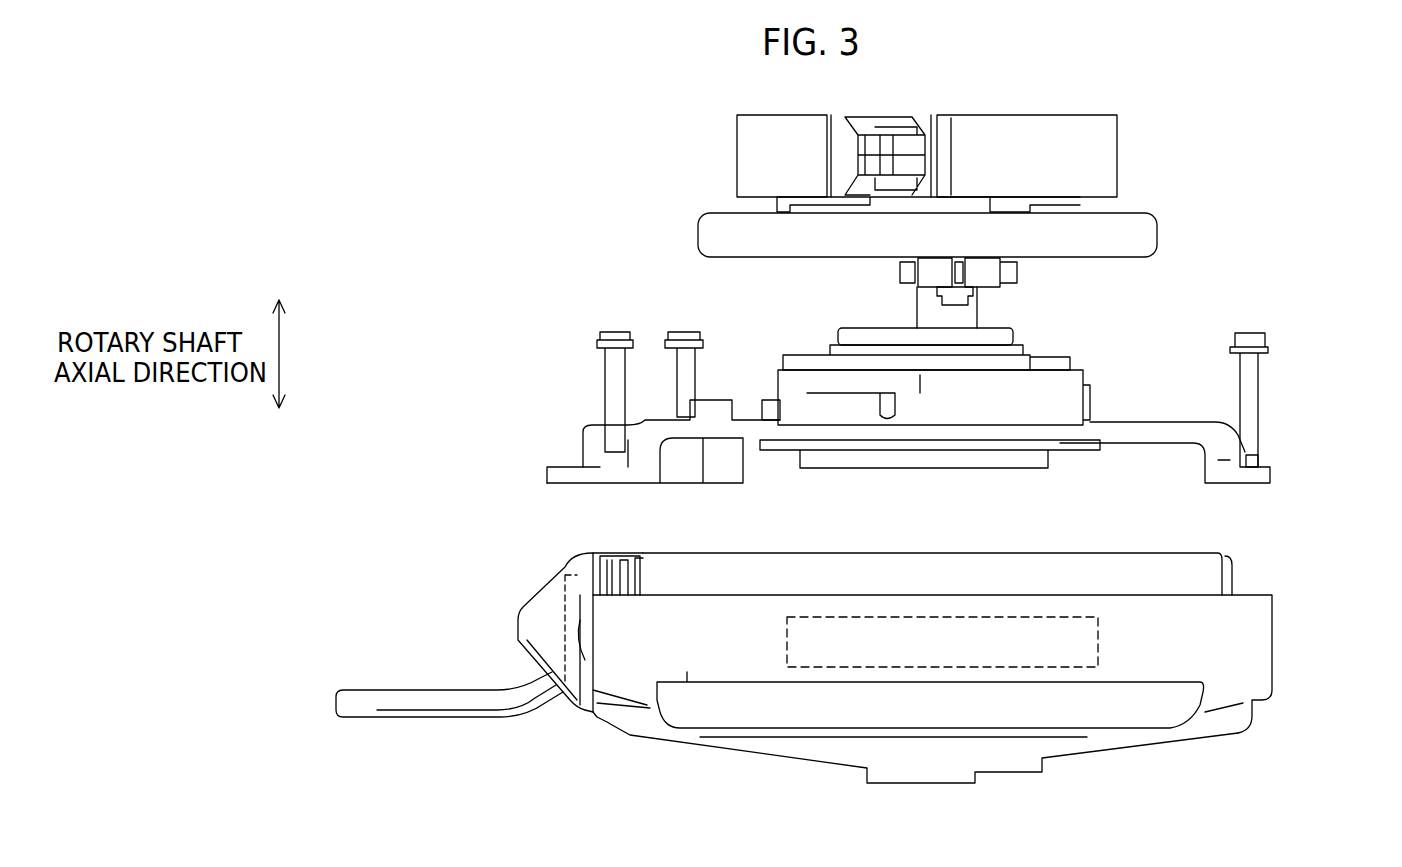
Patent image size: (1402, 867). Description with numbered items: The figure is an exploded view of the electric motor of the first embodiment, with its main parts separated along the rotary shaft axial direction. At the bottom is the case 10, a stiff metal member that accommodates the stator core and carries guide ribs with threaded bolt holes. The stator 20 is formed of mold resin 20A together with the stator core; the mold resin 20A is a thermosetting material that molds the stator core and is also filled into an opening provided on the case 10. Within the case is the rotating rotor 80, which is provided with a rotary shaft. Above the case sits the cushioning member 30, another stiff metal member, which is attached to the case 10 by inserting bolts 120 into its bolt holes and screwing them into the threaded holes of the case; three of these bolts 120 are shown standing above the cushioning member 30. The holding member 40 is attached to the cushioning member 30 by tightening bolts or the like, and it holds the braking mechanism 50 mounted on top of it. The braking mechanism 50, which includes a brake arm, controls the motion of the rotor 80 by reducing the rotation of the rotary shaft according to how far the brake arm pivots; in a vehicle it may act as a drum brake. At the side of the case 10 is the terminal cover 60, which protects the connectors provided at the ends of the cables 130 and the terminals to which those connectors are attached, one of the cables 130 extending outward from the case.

The case 10 is at (645, 735).
The stator 20 is at (1295, 642).
The mold resin 20A is at (643, 640).
The cushioning member 30 is at (590, 447).
The holding member 40 is at (1138, 232).
The braking mechanism 50 is at (1103, 160).
The terminal cover 60 is at (553, 590).
The rotor 80 is at (845, 672).
The bolts 120 is at (615, 363).
The cables 130 is at (403, 700).